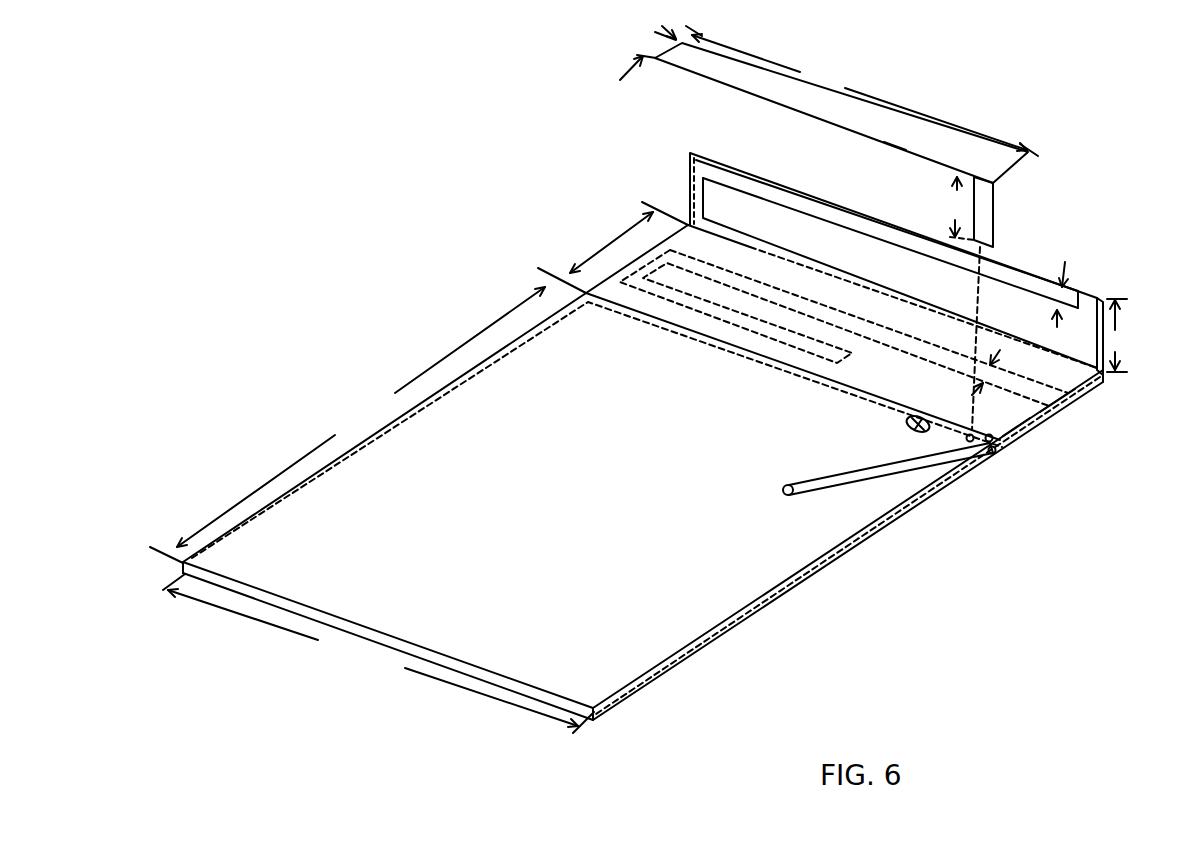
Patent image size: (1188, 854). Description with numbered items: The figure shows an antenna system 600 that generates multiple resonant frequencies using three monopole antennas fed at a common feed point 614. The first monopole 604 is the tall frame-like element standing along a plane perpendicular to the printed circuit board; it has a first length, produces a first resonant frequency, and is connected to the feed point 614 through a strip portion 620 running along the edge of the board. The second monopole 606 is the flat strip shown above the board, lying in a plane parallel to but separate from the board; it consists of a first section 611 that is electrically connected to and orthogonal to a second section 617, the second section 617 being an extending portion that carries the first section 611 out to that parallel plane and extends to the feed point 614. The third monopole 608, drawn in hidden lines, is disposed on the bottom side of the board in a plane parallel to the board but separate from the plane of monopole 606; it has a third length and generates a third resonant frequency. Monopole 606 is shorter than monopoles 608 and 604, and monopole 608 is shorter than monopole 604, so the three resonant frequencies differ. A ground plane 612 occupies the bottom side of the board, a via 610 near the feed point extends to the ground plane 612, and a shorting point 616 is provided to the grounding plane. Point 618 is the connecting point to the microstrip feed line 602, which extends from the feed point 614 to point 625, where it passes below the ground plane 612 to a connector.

The antenna system 600 is at (272, 182).
The microstrip feed line 602 is at (818, 481).
The monopole antenna 604 is at (828, 213).
The monopole antenna 606 is at (782, 105).
The monopole antenna 608 is at (873, 345).
The via 610 is at (907, 427).
The first section 611 is at (895, 140).
The ground plane 612 is at (655, 687).
The feed point 614 is at (995, 446).
The shorting point 616 is at (992, 455).
The second section 617 is at (997, 213).
The connecting point 618 is at (1005, 428).
The strip portion 620 is at (1060, 398).
The point 625 is at (783, 497).